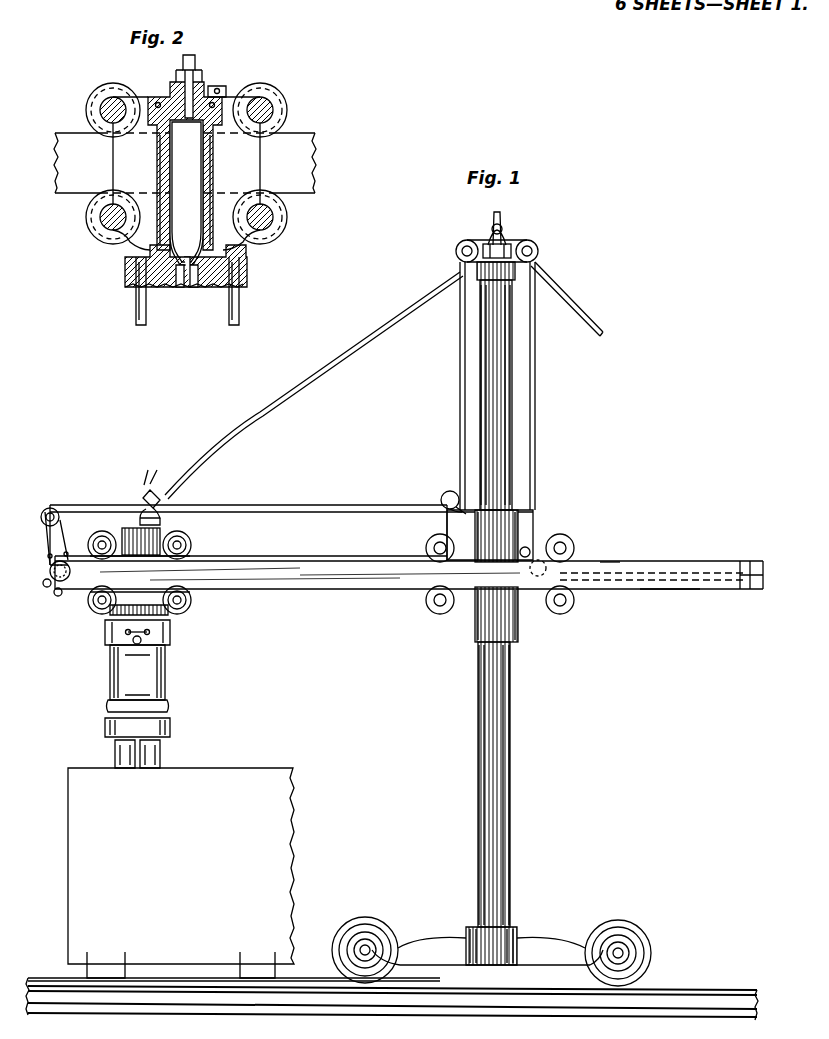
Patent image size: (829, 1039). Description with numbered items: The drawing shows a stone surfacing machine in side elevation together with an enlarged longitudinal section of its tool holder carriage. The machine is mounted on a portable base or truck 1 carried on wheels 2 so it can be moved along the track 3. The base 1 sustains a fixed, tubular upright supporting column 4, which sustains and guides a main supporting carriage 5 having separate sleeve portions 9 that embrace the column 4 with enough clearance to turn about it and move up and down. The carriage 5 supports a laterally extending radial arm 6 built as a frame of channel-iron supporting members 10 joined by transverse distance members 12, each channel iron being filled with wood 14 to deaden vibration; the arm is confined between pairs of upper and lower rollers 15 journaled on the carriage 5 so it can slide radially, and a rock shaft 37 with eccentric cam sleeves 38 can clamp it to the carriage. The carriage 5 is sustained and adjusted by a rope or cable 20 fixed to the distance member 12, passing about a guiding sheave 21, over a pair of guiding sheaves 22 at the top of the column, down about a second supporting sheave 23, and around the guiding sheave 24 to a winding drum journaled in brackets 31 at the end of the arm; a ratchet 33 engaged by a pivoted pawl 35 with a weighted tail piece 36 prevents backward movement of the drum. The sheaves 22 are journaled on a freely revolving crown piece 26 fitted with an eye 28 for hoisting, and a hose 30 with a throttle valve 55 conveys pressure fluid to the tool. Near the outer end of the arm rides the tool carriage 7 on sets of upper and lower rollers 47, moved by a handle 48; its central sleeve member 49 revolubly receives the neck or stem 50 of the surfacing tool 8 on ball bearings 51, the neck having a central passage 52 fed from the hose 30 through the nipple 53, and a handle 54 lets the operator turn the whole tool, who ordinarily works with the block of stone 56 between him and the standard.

In FIG. 1, the portable base or truck 1 is at (534, 948).
In FIG. 1, the wheels 2 is at (372, 930).
In FIG. 1, the track 3 is at (684, 988).
In FIG. 1, the upright supporting column 4 is at (498, 716).
In FIG. 1, the main supporting carriage 5 is at (462, 607).
In FIG. 1, the radial arm 6 is at (670, 602).
In FIG. 2, the tool carriage 7 is at (256, 166).
In FIG. 1, the tool carriage 7 is at (190, 549).
In FIG. 1, the stone surfacing or dressing tool 8 is at (112, 668).
In FIG. 1, the sleeve portions 9 is at (505, 528).
In FIG. 1, the supporting member 10 is at (322, 590).
In FIG. 1, the transverse distance member 12 is at (757, 591).
In FIG. 1, the wood filling 14 is at (676, 578).
In FIG. 1, the upper and lower rollers 15 is at (431, 548).
In FIG. 1, the rope or cable 20 is at (460, 374).
In FIG. 1, the guiding sheave 21 is at (608, 551).
In FIG. 1, the guiding sheaves 22 is at (470, 246).
In FIG. 1, the second supporting sheave 23 is at (446, 492).
In FIG. 1, the guiding sheave 24 is at (55, 508).
In FIG. 1, the crown piece 26 is at (516, 272).
In FIG. 1, the eye 28 is at (502, 230).
In FIG. 1, the hose 30 is at (350, 356).
In FIG. 1, the brackets 31 is at (47, 542).
In FIG. 1, the ratchet 33 is at (50, 576).
In FIG. 1, the pivoted pawl 35 is at (45, 587).
In FIG. 1, the weighted tail piece 36 is at (59, 597).
In FIG. 1, the rock shaft 37 is at (530, 552).
In FIG. 1, the eccentric cam sleeves 38 is at (546, 562).
In FIG. 2, the upper and lower rollers 47 is at (118, 88).
In FIG. 1, the upper and lower rollers 47 is at (90, 537).
In FIG. 1, the handle 48 is at (172, 612).
In FIG. 2, the central supporting sleeve member 49 is at (158, 161).
In FIG. 1, the central supporting sleeve member 49 is at (160, 625).
In FIG. 2, the neck or stem 50 is at (210, 172).
In FIG. 2, the ball bearings 51 is at (226, 87).
In FIG. 2, the central passage 52 is at (186, 288).
In FIG. 2, the nipple 53 is at (196, 74).
In FIG. 1, the handle 54 is at (166, 704).
In FIG. 1, the throttle valve 55 is at (146, 486).
In FIG. 1, the block of stone 56 is at (181, 873).